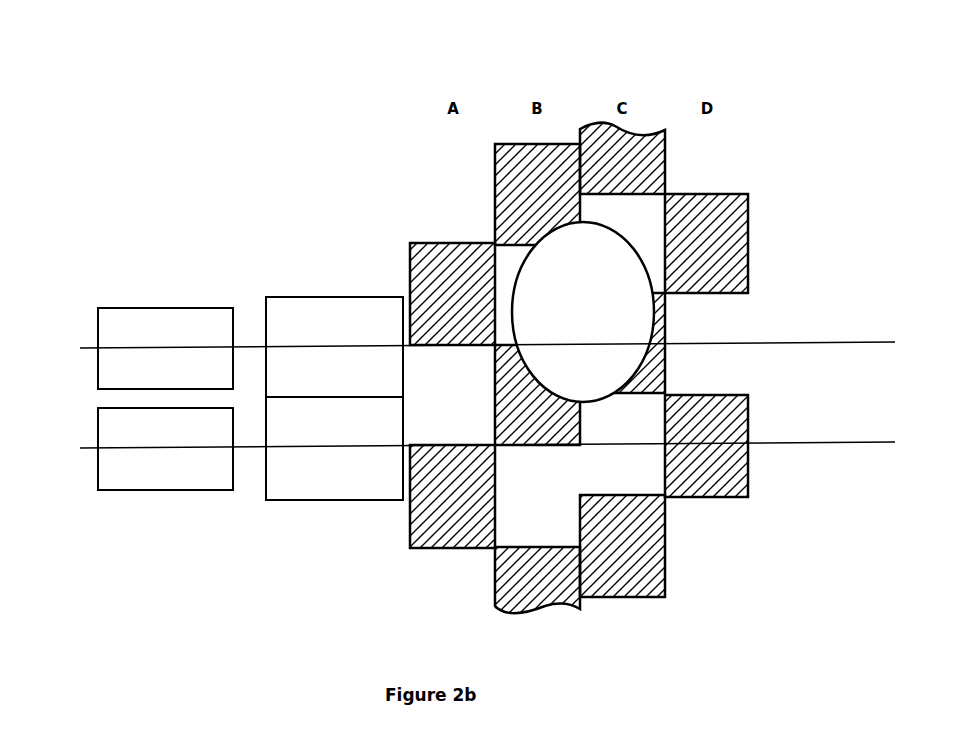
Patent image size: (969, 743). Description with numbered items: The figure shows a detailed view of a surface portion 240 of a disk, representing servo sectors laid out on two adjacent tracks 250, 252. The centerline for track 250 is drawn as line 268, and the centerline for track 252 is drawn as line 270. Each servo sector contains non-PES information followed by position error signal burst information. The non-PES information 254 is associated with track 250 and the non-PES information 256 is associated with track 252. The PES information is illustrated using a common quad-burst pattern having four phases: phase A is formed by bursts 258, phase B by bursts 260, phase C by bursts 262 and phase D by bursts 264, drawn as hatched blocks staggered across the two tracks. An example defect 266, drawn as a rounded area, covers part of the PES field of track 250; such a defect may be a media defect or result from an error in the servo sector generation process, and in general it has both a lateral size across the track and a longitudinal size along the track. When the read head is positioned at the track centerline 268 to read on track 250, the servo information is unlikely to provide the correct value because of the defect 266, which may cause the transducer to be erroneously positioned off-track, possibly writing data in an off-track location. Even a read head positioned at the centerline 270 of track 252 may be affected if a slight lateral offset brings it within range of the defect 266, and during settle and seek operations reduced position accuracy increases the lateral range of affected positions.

The surface portion 240 is at (145, 60).
The track 250 is at (165, 348).
The track 252 is at (165, 449).
The non-PES information 254 is at (334, 347).
The non-PES information 256 is at (334, 448).
The PES burst information 258 is at (452, 294).
The PES burst information 260 is at (537, 194).
The PES burst information 262 is at (622, 546).
The PES burst information 264 is at (706, 243).
The defect 266 is at (583, 312).
The track centerline 268 is at (7, 349).
The track centerline 270 is at (18, 449).